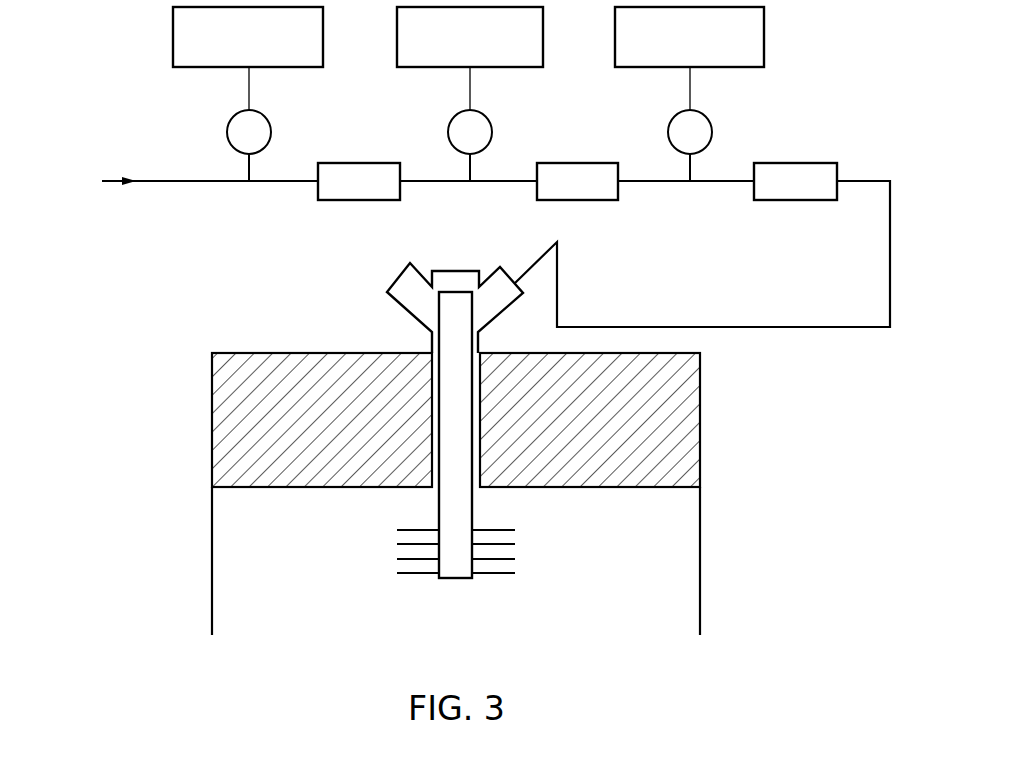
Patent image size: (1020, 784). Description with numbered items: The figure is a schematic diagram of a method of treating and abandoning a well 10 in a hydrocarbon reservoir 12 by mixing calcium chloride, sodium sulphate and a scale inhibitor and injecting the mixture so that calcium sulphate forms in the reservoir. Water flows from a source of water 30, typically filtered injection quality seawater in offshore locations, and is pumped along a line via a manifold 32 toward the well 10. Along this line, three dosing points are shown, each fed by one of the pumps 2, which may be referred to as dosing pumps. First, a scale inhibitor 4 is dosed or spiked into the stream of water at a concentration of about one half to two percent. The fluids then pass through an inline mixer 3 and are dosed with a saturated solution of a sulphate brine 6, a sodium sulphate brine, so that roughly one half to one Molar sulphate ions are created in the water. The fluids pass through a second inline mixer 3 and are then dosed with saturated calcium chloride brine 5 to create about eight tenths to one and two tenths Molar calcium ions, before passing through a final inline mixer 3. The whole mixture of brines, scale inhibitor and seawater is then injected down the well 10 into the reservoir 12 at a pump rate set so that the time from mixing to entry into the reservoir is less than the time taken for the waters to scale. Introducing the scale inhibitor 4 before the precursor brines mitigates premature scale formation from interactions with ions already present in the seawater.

The pumps 2 is at (240, 146).
The inline mixer 3 is at (350, 195).
The scale inhibitor 4 is at (240, 49).
The calcium chloride brine 5 is at (681, 49).
The sulphate brine 6 is at (461, 49).
The well 10 is at (478, 470).
The hydrocarbon reservoir 12 is at (595, 604).
The source of water 30 is at (91, 182).
The manifold 32 is at (203, 182).